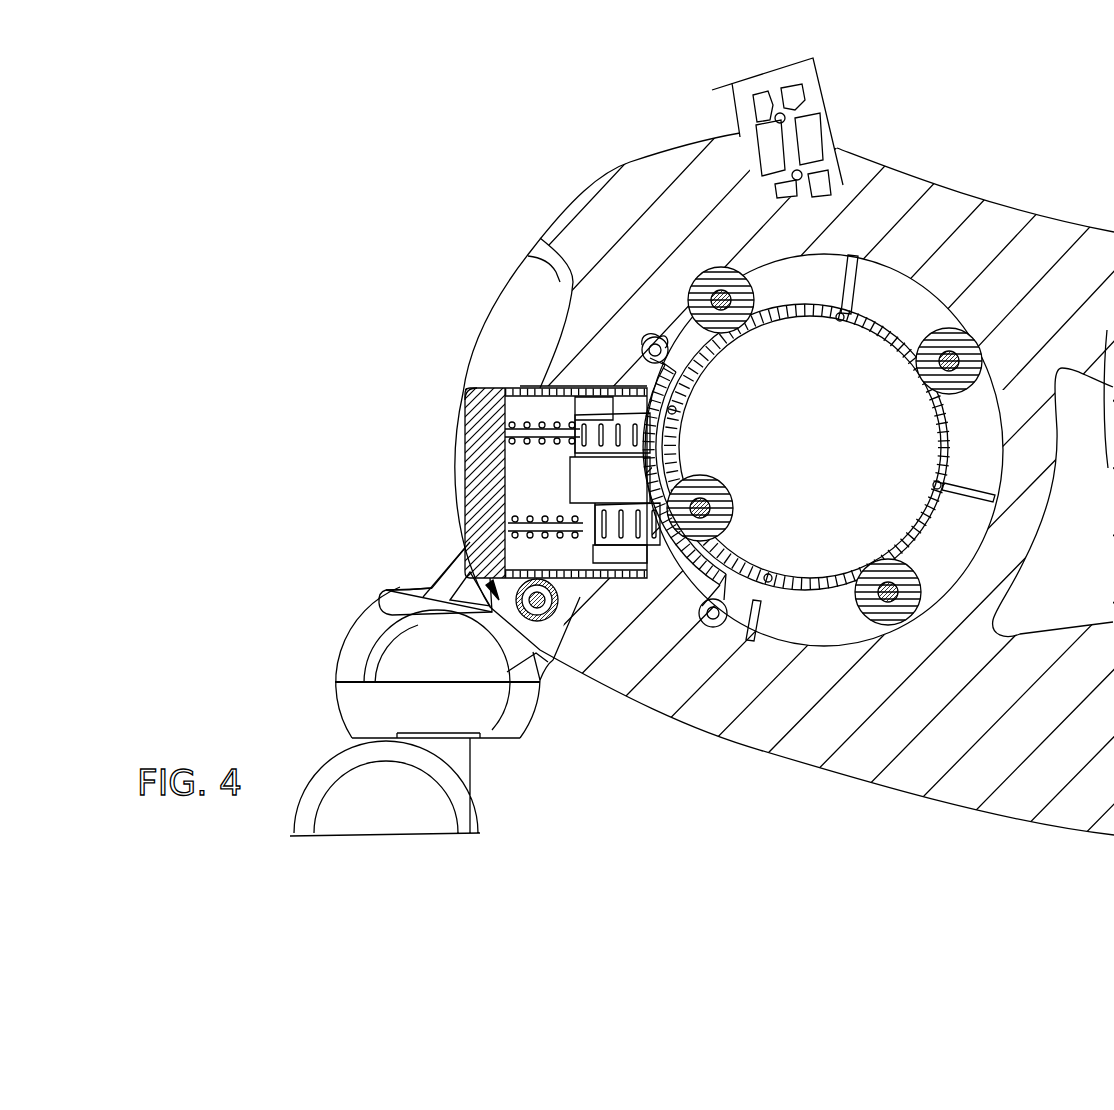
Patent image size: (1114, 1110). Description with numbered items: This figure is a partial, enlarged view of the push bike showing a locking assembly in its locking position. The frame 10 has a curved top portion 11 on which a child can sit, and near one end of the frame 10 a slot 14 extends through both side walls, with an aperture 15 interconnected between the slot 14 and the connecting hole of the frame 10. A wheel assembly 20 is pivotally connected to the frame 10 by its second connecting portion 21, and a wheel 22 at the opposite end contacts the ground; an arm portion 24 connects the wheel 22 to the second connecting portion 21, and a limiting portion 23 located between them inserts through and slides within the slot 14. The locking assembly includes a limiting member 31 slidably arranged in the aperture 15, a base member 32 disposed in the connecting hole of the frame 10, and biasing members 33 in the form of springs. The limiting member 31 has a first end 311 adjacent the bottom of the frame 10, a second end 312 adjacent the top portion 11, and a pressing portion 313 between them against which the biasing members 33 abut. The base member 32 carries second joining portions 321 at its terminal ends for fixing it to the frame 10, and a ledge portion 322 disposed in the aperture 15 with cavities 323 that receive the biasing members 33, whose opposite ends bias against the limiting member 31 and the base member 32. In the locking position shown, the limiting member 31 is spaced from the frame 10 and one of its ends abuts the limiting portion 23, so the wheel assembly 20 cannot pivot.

The frame 10 is at (958, 150).
The curved top portion 11 is at (1048, 215).
The slot 14 is at (587, 392).
The aperture 15 is at (557, 393).
The wheel assembly 20 is at (508, 745).
The second connecting portion 21 is at (773, 267).
The wheel 22 is at (343, 797).
The limiting portion 23 is at (550, 630).
The arm portion 24 is at (453, 572).
The limiting member 31 is at (465, 458).
The first end 311 is at (398, 590).
The second end 312 is at (490, 386).
The pressing portion 313 is at (466, 421).
The base member 32 is at (683, 600).
The second joining portion 321 is at (657, 325).
The ledge portion 322 is at (648, 585).
The cavity 323 is at (520, 255).
The biasing member 33 is at (518, 385).